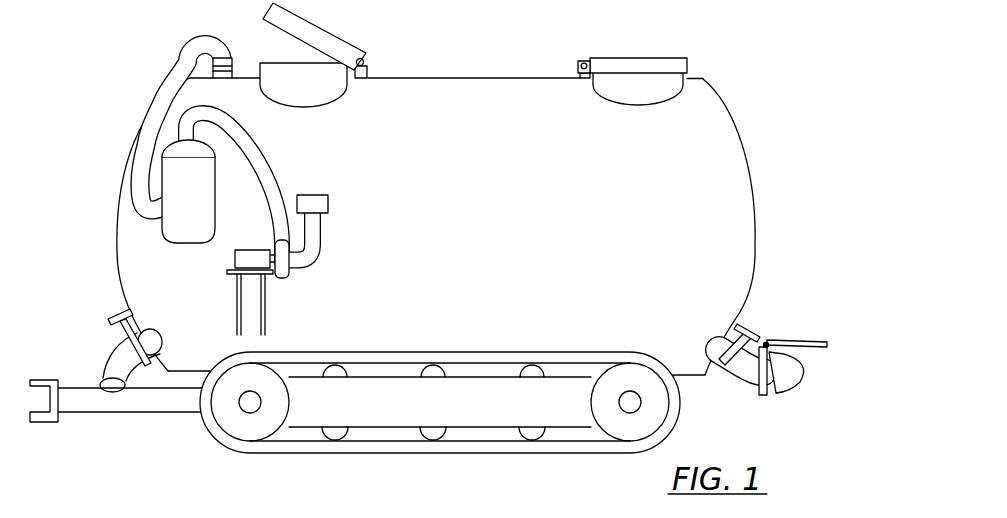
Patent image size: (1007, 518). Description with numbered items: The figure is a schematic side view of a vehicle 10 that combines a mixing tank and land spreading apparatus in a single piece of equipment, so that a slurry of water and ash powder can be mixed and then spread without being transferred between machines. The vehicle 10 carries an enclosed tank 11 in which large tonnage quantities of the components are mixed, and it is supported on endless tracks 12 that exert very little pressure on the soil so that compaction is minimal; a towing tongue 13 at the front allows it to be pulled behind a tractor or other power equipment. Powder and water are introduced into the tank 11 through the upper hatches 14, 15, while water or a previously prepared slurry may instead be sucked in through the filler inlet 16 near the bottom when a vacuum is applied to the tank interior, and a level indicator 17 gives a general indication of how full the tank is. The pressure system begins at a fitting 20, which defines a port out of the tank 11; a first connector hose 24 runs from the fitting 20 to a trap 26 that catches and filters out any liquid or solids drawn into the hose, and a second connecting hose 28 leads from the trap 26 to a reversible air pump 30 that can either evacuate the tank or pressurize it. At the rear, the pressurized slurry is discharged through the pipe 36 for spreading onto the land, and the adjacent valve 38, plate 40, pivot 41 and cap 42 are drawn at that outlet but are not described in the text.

The vehicle 10 is at (735, 122).
The tank 11 is at (538, 250).
The endless tracks 12 is at (411, 455).
The towing tongue 13 is at (110, 413).
The upper hatch 14 is at (337, 38).
The upper hatch 15 is at (610, 58).
The filler inlet 16 is at (107, 357).
The level indicator 17 is at (146, 240).
The fitting 20 is at (233, 67).
The first connector hose 24 is at (182, 48).
The trap 26 is at (198, 244).
The second connecting hose 28 is at (262, 162).
The reversible air pump 30 is at (279, 279).
The pipe 36 is at (770, 392).
The discharge valve 38 is at (754, 331).
The cover plate 40 is at (827, 341).
The pivot 41 is at (771, 342).
The cap 42 is at (806, 368).